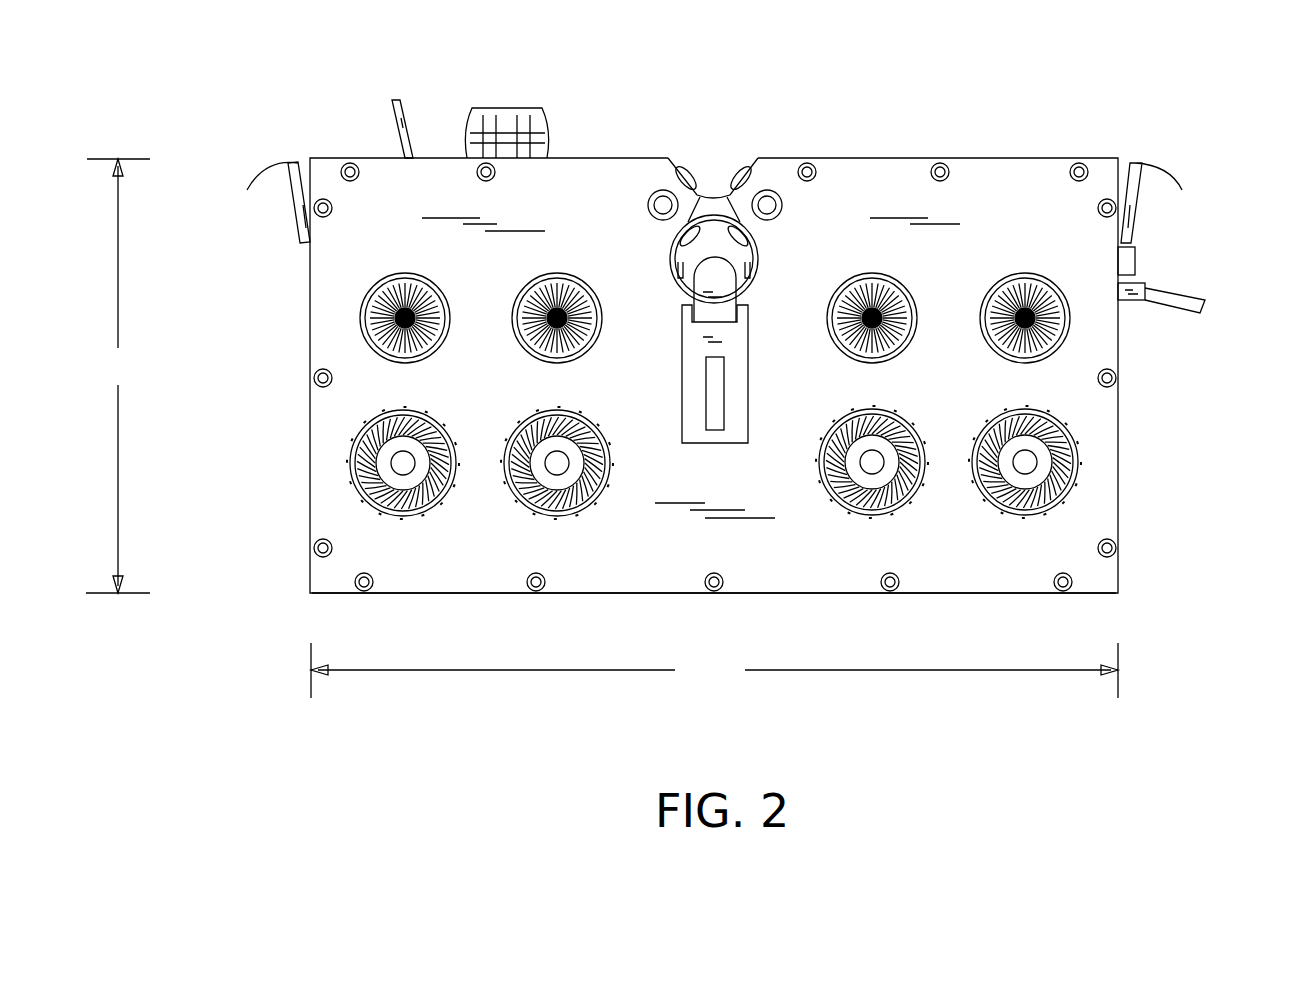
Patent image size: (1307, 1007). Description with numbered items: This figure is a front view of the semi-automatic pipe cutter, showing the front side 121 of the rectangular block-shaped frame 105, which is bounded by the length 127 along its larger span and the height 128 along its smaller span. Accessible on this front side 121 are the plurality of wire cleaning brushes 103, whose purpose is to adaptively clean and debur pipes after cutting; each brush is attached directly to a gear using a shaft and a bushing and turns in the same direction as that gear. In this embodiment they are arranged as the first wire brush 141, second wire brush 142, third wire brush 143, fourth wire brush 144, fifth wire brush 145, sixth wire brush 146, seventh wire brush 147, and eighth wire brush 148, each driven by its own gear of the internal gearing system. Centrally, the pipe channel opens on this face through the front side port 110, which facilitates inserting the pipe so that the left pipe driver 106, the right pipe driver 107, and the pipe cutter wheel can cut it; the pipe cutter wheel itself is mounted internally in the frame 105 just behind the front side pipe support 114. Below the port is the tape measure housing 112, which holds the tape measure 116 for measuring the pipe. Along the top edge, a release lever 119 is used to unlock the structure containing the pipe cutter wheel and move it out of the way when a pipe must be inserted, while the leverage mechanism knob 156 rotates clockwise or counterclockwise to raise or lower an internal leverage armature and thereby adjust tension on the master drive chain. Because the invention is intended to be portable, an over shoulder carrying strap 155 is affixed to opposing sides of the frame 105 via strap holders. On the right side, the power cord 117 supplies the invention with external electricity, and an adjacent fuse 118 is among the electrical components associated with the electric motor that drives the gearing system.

The plurality of wire cleaning brushes 103 is at (708, 392).
The frame 105 is at (1037, 163).
The left pipe driver 106 is at (689, 158).
The right pipe driver 107 is at (747, 162).
The front side port 110 is at (725, 245).
The tape measure housing 112 is at (740, 374).
The front side pipe support 114 is at (676, 266).
The tape measure 116 is at (727, 282).
The power cord 117 is at (1180, 298).
The fuse 118 is at (1133, 260).
The release lever 119 is at (407, 122).
The front side 121 is at (1000, 584).
The length 127 is at (714, 670).
The height 128 is at (118, 376).
The first wire brush 141 is at (363, 300).
The second wire brush 142 is at (580, 262).
The third wire brush 143 is at (920, 272).
The fourth wire brush 144 is at (1010, 275).
The fifth wire brush 145 is at (1065, 418).
The sixth wire brush 146 is at (822, 480).
The seventh wire brush 147 is at (592, 415).
The eighth wire brush 148 is at (348, 450).
The over shoulder carrying strap 155 is at (292, 200).
The leverage mechanism knob 156 is at (500, 112).